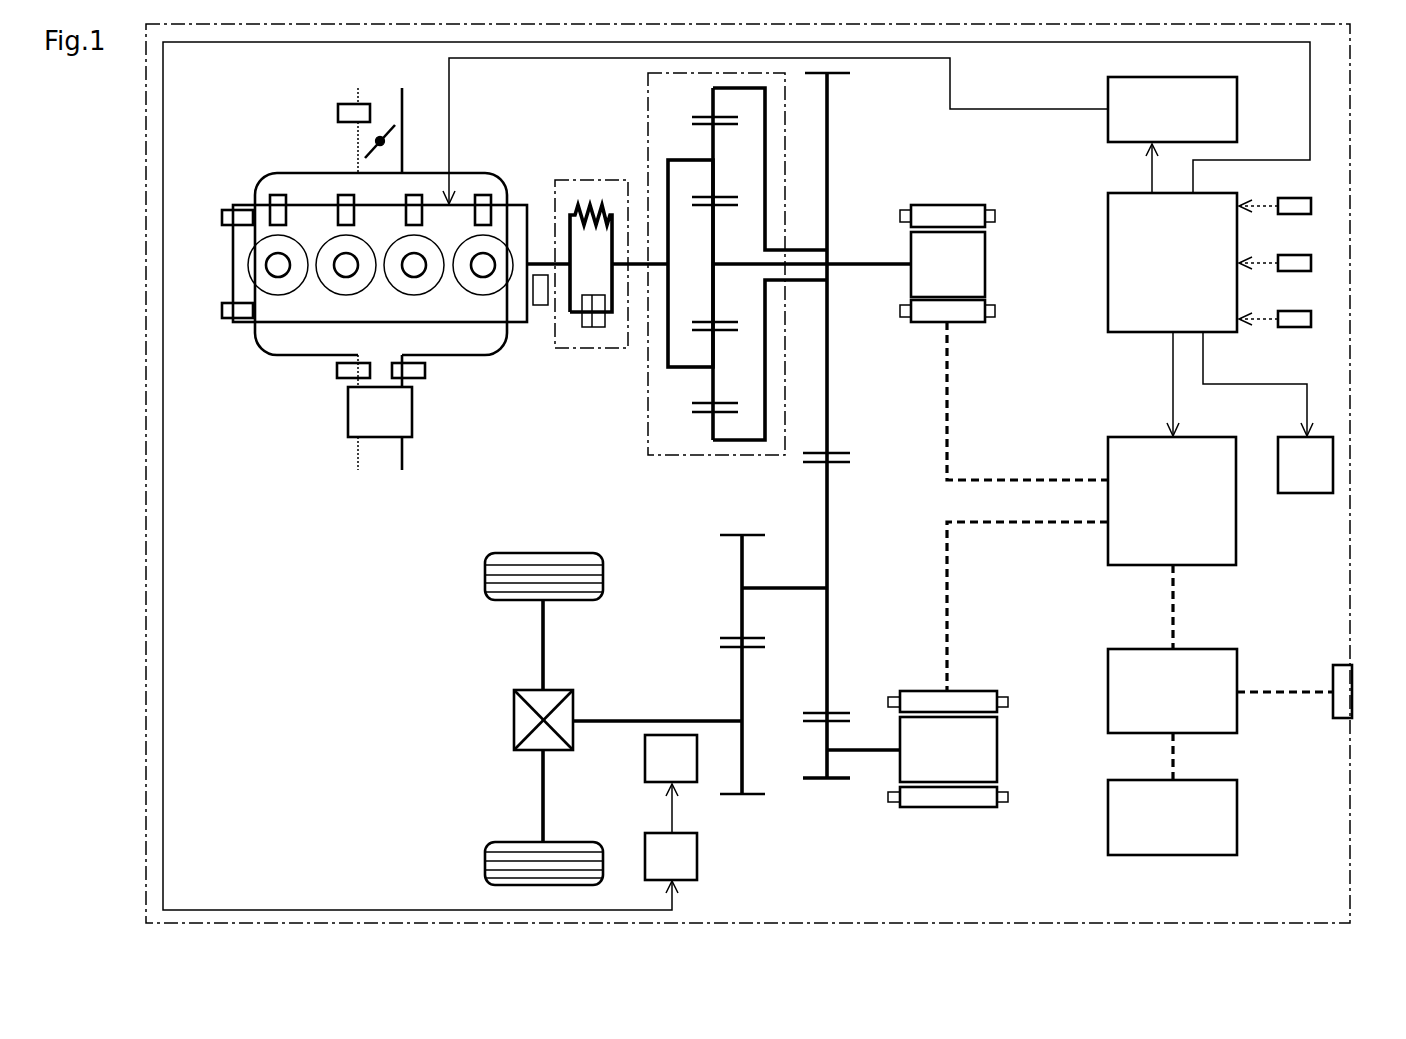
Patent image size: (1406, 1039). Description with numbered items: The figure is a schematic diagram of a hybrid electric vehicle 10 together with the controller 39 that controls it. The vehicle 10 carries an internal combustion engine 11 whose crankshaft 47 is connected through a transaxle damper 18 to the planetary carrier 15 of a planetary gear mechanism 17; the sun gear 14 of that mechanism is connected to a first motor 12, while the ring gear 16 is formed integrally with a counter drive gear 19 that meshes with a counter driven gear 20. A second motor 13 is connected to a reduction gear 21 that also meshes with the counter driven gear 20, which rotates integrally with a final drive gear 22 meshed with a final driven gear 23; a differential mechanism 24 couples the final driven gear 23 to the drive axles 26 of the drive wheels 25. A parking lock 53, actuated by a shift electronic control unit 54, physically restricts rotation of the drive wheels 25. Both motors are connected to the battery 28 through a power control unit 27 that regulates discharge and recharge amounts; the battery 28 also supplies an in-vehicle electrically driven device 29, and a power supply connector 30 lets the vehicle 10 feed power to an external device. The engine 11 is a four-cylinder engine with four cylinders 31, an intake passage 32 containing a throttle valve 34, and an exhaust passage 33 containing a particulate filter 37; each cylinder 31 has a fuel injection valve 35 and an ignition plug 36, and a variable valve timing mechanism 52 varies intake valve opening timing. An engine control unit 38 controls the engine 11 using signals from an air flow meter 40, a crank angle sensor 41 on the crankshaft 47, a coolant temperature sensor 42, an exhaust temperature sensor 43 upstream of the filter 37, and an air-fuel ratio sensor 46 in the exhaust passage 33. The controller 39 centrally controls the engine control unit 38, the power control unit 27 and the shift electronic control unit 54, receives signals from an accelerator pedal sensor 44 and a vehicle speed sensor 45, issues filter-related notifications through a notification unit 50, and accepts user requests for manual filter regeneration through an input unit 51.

The hybrid electric vehicle 10 is at (1350, 63).
The internal combustion engine 11 is at (233, 250).
The first motor 12 is at (985, 260).
The second motor 13 is at (997, 746).
The sun gear 14 is at (713, 290).
The planetary carrier 15 is at (683, 160).
The ring gear 16 is at (713, 424).
The planetary gear mechanism 17 is at (648, 103).
The transaxle damper 18 is at (590, 350).
The counter drive gear 19 is at (828, 425).
The counter driven gear 20 is at (828, 489).
The reduction gear 21 is at (824, 732).
The final drive gear 22 is at (741, 549).
The final driven gear 23 is at (741, 659).
The differential mechanism 24 is at (514, 717).
The drive wheels 25 is at (485, 571).
The drive axles 26 is at (545, 640).
The power control unit 27 is at (1108, 451).
The battery 28 is at (1108, 672).
The in-vehicle electrically driven device 29 is at (1108, 804).
The power supply connector 30 is at (1340, 665).
The cylinders 31 is at (380, 295).
The intake passage 32 is at (403, 110).
The exhaust passage 33 is at (403, 450).
The throttle valve 34 is at (372, 150).
The fuel injection valve 35 is at (287, 212).
The ignition plug 36 is at (278, 278).
The filter 37 is at (348, 409).
The engine control unit 38 is at (1237, 104).
The controller 39 is at (1108, 217).
The air flow meter 40 is at (338, 113).
The crank angle sensor 41 is at (540, 305).
The coolant temperature sensor 42 is at (216, 320).
The exhaust temperature sensor 43 is at (425, 372).
The accelerator pedal sensor 44 is at (1311, 208).
The vehicle speed sensor 45 is at (1311, 265).
The air-fuel ratio sensor 46 is at (337, 372).
The crankshaft 47 is at (546, 262).
The notification unit 50 is at (1290, 437).
The input unit 51 is at (1311, 321).
The variable valve timing mechanism 52 is at (214, 213).
The parking lock 53 is at (645, 745).
The shift electronic control unit 54 is at (697, 852).